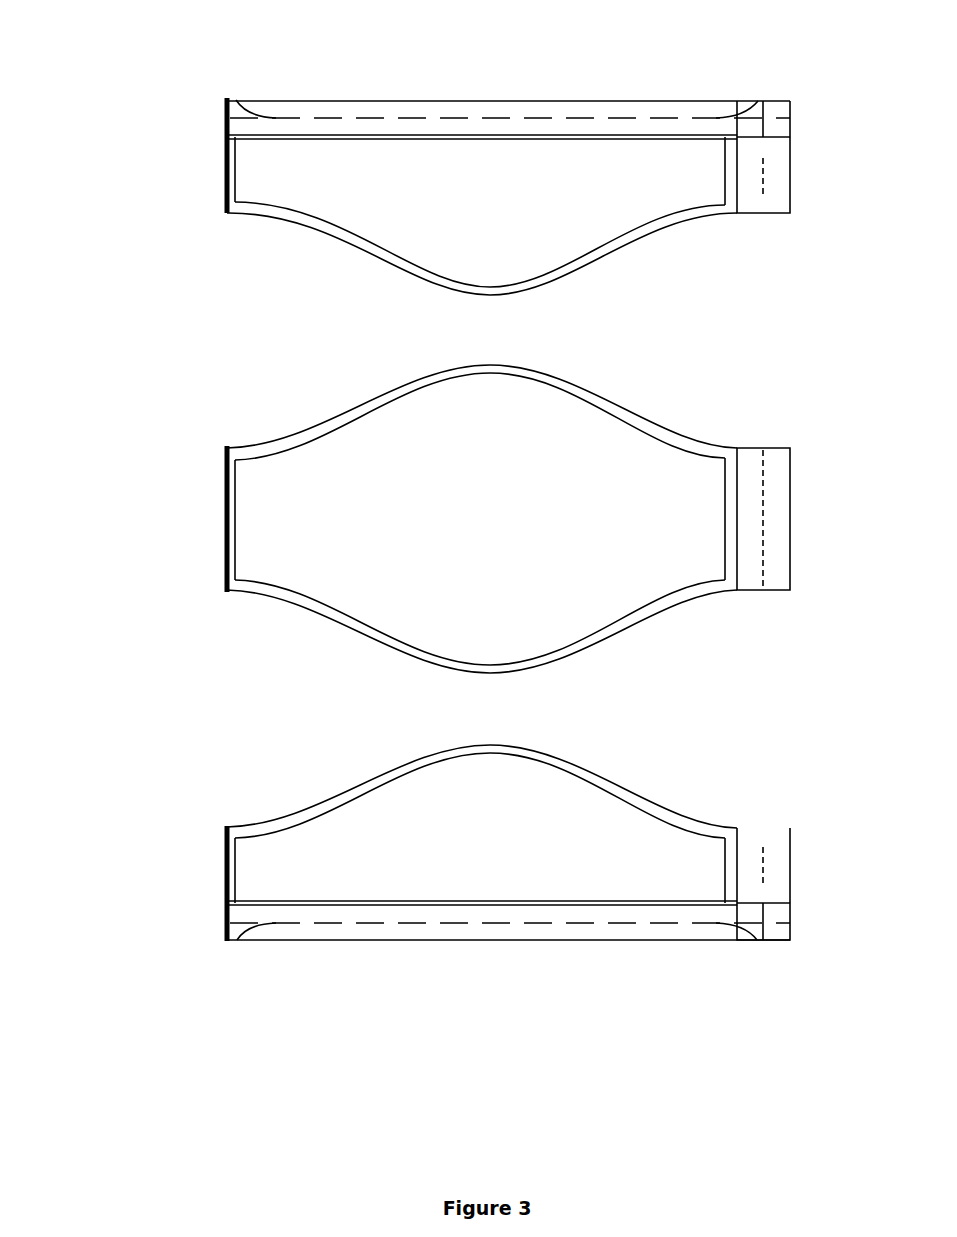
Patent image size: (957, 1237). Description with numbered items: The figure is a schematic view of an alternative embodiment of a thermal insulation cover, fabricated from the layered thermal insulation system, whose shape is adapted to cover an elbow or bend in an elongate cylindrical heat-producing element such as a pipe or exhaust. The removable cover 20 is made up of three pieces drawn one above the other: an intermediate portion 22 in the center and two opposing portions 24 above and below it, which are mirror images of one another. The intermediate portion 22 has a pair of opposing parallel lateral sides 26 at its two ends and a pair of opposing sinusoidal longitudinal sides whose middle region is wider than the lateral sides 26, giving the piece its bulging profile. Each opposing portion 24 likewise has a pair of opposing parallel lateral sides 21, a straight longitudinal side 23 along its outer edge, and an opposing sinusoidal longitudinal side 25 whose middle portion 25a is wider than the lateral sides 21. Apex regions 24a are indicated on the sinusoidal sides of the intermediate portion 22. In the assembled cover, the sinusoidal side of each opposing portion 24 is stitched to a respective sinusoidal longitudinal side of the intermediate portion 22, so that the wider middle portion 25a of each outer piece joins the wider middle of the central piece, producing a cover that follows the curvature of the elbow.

The removable cover 20 is at (461, 521).
The opposing parallel lateral sides 21 is at (226, 158).
The intermediate portion 22 is at (570, 428).
The straight longitudinal side 23 is at (537, 101).
The opposing portions 24 is at (595, 230).
The apex of curved lateral edge 24a is at (480, 393).
The sinusoidal longitudinal side 25 is at (385, 265).
The middle portion 25a is at (495, 265).
The opposing parallel lateral sides 26 is at (225, 518).